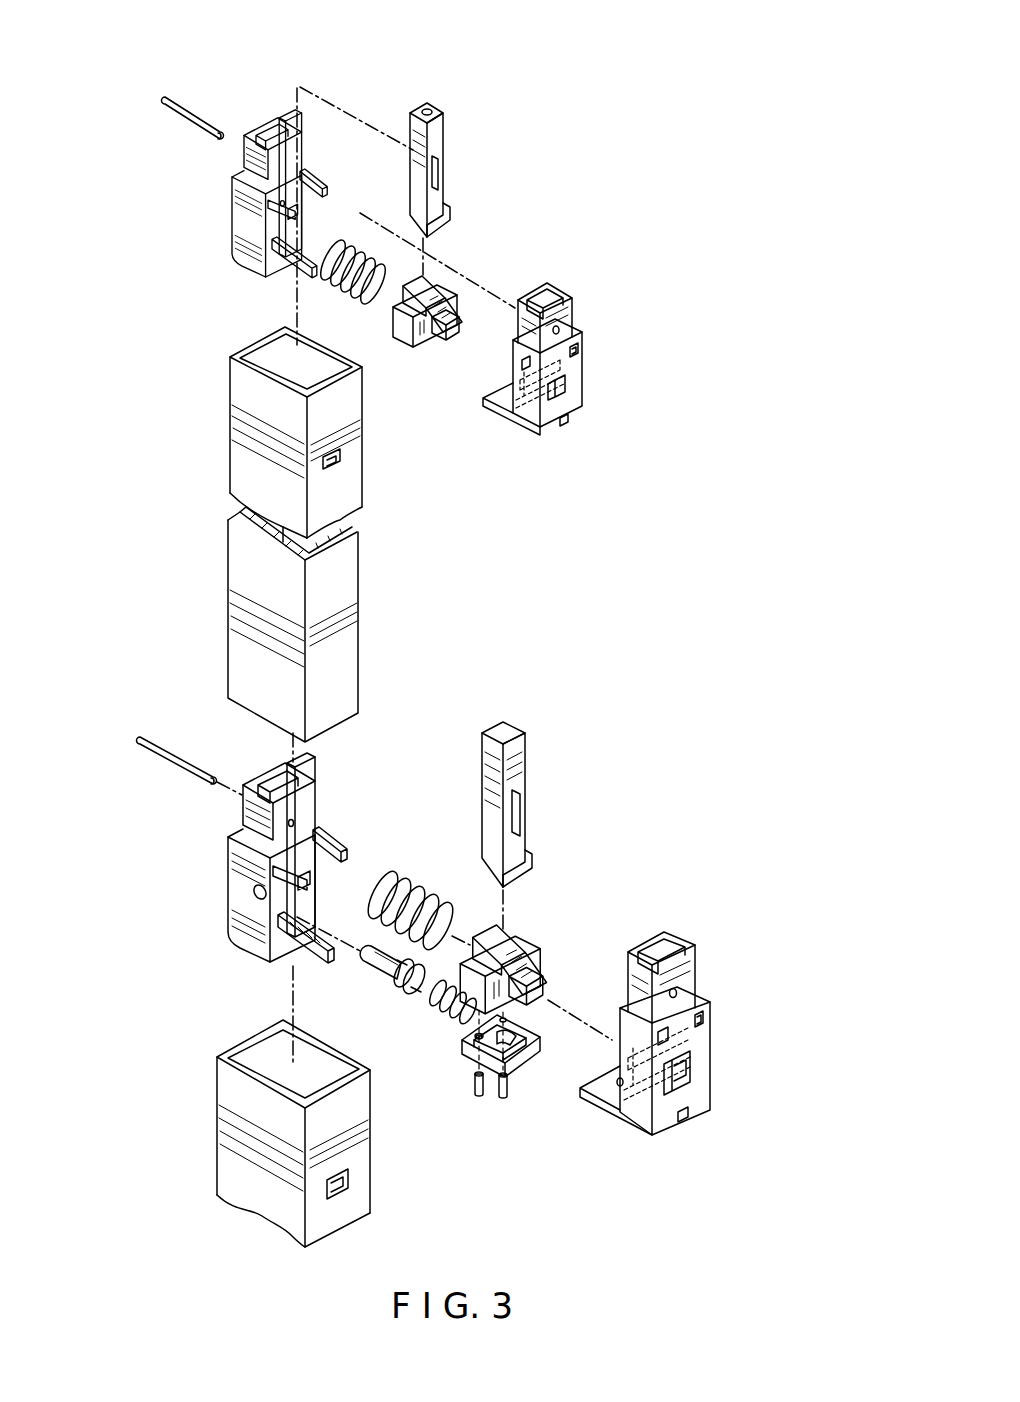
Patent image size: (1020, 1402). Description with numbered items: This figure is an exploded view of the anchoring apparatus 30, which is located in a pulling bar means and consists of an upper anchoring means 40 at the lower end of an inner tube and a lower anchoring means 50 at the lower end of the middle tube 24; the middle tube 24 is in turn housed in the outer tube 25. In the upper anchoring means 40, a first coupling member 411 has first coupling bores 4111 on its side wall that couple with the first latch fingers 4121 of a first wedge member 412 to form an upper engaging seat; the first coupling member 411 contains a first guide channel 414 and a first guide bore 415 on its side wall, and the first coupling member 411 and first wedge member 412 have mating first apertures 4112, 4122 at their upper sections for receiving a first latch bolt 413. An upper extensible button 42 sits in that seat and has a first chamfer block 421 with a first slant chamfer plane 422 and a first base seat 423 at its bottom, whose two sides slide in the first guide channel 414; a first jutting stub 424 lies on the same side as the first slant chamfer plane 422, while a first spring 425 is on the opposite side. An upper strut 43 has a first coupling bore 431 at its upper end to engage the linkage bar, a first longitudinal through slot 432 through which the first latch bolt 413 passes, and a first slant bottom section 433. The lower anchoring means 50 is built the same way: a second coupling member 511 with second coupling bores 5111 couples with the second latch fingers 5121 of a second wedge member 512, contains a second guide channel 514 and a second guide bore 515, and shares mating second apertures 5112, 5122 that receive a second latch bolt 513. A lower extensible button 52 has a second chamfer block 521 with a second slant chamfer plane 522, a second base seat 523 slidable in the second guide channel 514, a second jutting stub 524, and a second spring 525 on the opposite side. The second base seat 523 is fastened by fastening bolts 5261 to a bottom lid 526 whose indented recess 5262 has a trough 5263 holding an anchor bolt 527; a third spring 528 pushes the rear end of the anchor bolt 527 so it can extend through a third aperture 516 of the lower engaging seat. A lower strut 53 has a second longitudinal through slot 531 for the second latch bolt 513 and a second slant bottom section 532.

The middle tube 24 is at (222, 540).
The outer tube 25 is at (212, 1117).
The anchoring apparatus 30 is at (684, 157).
The upper anchoring means 40 is at (217, 85).
The first coupling member 411 is at (578, 320).
The first coupling bores 4111 is at (582, 350).
The first aperture 4112 is at (558, 330).
The first wedge member 412 is at (237, 205).
The first latch fingers 4121 is at (275, 212).
The first aperture 4122 is at (290, 115).
The first latch bolt 413 is at (183, 118).
The first guide channel 414 is at (495, 405).
The first guide bore 415 is at (570, 392).
The upper extensible button 42 is at (457, 295).
The first chamfer block 421 is at (413, 303).
The first slant chamfer plane 422 is at (427, 307).
The first base seat 423 is at (397, 318).
The first jutting stub 424 is at (443, 323).
The first spring 425 is at (333, 277).
The upper strut 43 is at (450, 147).
The first coupling bore 431 is at (430, 108).
The first longitudinal through slot 432 is at (440, 170).
The first slant bottom section 433 is at (422, 207).
The lower anchoring means 50 is at (215, 747).
The second coupling member 511 is at (700, 980).
The second coupling bores 5111 is at (707, 1023).
The second aperture 5112 is at (677, 993).
The second wedge member 512 is at (317, 800).
The second latch fingers 5121 is at (340, 855).
The second aperture 5122 is at (288, 823).
The second latch bolt 513 is at (160, 757).
The second guide channel 514 is at (597, 1100).
The second guide bore 515 is at (688, 1082).
The third aperture 516 is at (256, 890).
The lower extensible button 52 is at (545, 935).
The second chamfer block 521 is at (487, 930).
The second slant chamfer plane 522 is at (522, 967).
The second base seat 523 is at (475, 1037).
The second jutting stub 524 is at (537, 992).
The second spring 525 is at (378, 890).
The bottom lid 526 is at (467, 1063).
The fastening bolts 5261 is at (498, 1100).
The indented recess 5262 is at (512, 1042).
The trough 5263 is at (465, 1047).
The anchor bolt 527 is at (387, 973).
The third spring 528 is at (428, 1000).
The lower strut 53 is at (530, 770).
The second longitudinal through slot 531 is at (520, 818).
The second slant bottom section 532 is at (482, 863).